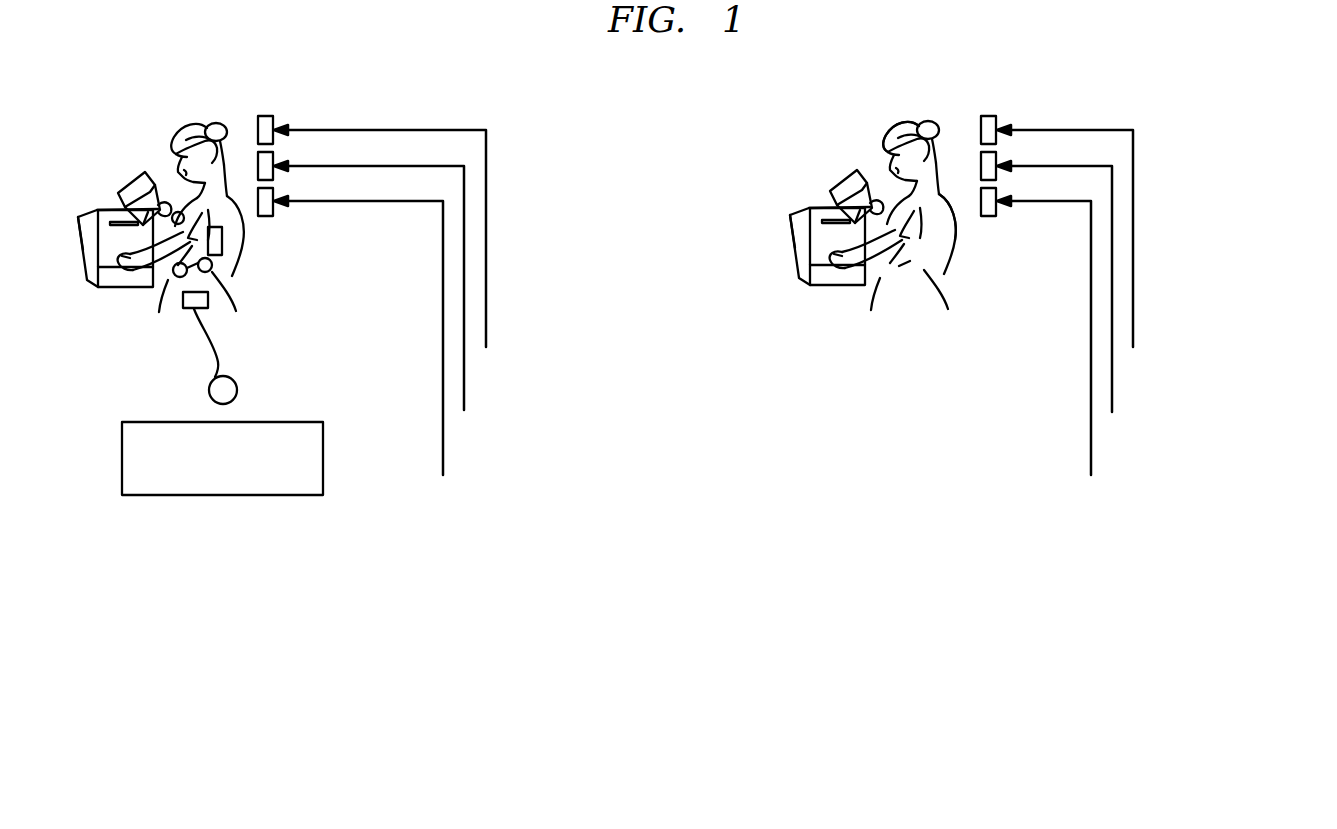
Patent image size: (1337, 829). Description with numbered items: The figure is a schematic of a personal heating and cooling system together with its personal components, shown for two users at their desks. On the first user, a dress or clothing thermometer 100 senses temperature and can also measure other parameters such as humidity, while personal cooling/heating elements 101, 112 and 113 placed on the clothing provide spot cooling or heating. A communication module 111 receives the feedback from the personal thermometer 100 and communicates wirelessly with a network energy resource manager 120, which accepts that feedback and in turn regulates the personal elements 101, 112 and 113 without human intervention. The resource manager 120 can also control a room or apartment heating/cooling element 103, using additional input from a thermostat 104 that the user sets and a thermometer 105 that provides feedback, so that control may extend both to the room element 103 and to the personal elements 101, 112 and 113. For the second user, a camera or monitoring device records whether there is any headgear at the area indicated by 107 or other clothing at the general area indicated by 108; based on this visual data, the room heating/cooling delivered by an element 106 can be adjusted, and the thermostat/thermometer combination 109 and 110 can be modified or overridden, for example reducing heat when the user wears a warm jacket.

The dress thermometer 100 is at (222, 245).
The personal cooling/heating element 101 is at (210, 272).
The room/apartment heating/cooling element 103 is at (486, 334).
The thermostat 104 is at (464, 401).
The thermometer 105 is at (443, 466).
The heating/cooling element 106 is at (1133, 334).
The headgear area 107 is at (922, 126).
The clothing area 108 is at (900, 225).
The thermostat 109 is at (1112, 401).
The thermometer 110 is at (1091, 466).
The communication module 111 is at (205, 348).
The personal cooling/heating element 112 is at (175, 212).
The personal cooling/heating element 113 is at (176, 278).
The network energy resource manager 120 is at (122, 453).